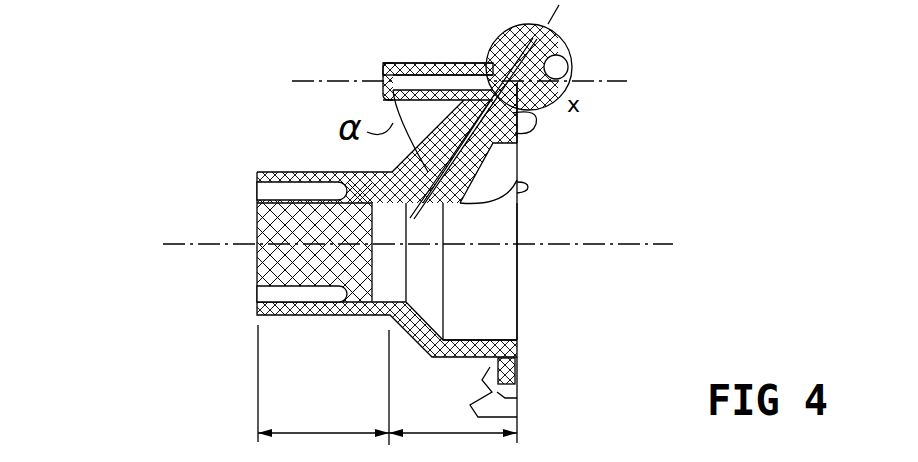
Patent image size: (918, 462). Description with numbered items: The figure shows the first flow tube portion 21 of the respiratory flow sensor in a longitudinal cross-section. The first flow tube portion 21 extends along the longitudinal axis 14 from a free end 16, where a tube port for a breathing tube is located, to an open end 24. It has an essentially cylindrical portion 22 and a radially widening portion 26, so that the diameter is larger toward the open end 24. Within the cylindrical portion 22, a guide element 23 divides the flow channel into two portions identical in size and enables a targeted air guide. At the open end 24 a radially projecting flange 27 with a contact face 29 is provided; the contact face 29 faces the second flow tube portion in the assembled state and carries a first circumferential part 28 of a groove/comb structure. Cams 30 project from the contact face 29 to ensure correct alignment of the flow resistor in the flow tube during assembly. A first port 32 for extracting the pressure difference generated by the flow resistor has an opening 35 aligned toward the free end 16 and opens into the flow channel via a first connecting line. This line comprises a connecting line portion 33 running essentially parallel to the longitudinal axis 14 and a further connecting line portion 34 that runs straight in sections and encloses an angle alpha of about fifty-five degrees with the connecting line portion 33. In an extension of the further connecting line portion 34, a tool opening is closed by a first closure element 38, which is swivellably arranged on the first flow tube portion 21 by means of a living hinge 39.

The longitudinal axis 14 is at (648, 243).
The free end 16 is at (258, 286).
The first flow tube portion 21 is at (205, 120).
The essentially cylindrical portion 22 is at (323, 385).
The guide element 23 is at (290, 222).
The open end 24 is at (522, 265).
The radially widening portion 26 is at (453, 414).
The radially projecting flange 27 is at (517, 407).
The first circumferential part 28 is at (520, 128).
The contact face 29 is at (522, 302).
The cams 30 is at (522, 186).
The first port 32 is at (362, 74).
The connecting line portion 33 is at (407, 63).
The further connecting line portion 34 is at (522, 143).
The opening 35 is at (383, 90).
The first closure element 38 is at (548, 33).
The living hinge 39 is at (570, 64).